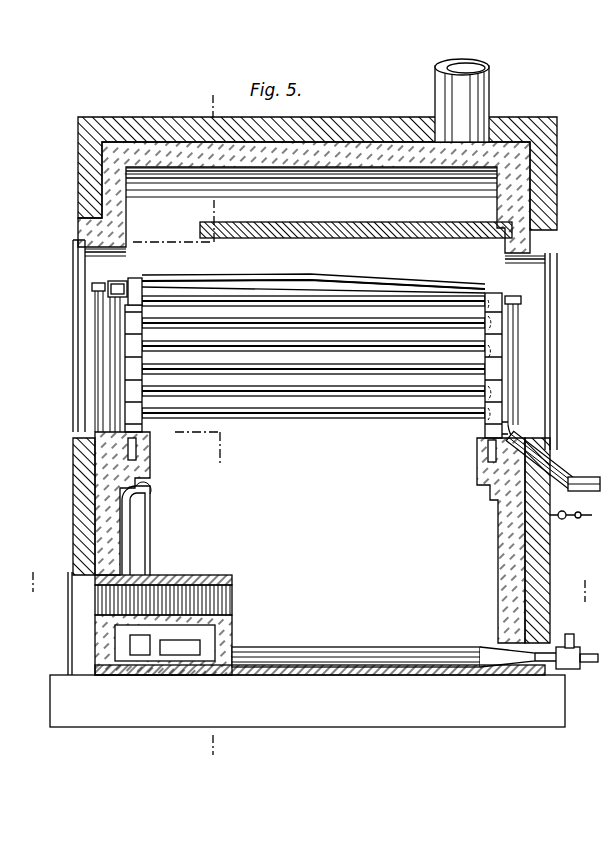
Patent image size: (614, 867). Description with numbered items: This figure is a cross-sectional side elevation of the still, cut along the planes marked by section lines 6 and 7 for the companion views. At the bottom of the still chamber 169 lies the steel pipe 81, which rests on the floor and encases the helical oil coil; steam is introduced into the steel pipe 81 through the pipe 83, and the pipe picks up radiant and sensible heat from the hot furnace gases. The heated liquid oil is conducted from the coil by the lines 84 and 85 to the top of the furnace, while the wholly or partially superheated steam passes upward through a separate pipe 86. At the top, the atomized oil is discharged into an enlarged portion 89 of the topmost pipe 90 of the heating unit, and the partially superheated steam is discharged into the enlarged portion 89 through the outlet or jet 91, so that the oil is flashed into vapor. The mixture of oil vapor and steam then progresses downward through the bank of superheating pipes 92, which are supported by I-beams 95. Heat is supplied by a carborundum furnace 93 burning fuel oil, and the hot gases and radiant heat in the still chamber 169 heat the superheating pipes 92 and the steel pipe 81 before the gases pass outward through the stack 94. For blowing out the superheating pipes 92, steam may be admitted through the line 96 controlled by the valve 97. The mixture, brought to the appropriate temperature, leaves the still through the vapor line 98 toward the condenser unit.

The section line 6- 6 is at (185, 97).
The section line 7- 7 is at (62, 595).
The steel pipe 81 is at (394, 648).
The steam pipe 83 is at (575, 650).
The oil line 84 is at (128, 668).
The oil line 85 is at (82, 523).
The steam pipe 86 is at (148, 533).
The enlarged portion 89 is at (200, 280).
The topmost pipe 90 is at (385, 300).
The steam outlet or jet 91 is at (127, 289).
The superheating pipes 92 is at (487, 326).
The carborundum furnace 93 is at (186, 575).
The stack 94 is at (489, 98).
The I-beams 95 is at (137, 452).
The steam line 96 is at (516, 320).
The valve 97 is at (572, 519).
The vapor line 98 is at (590, 478).
The still chamber 169 is at (518, 213).